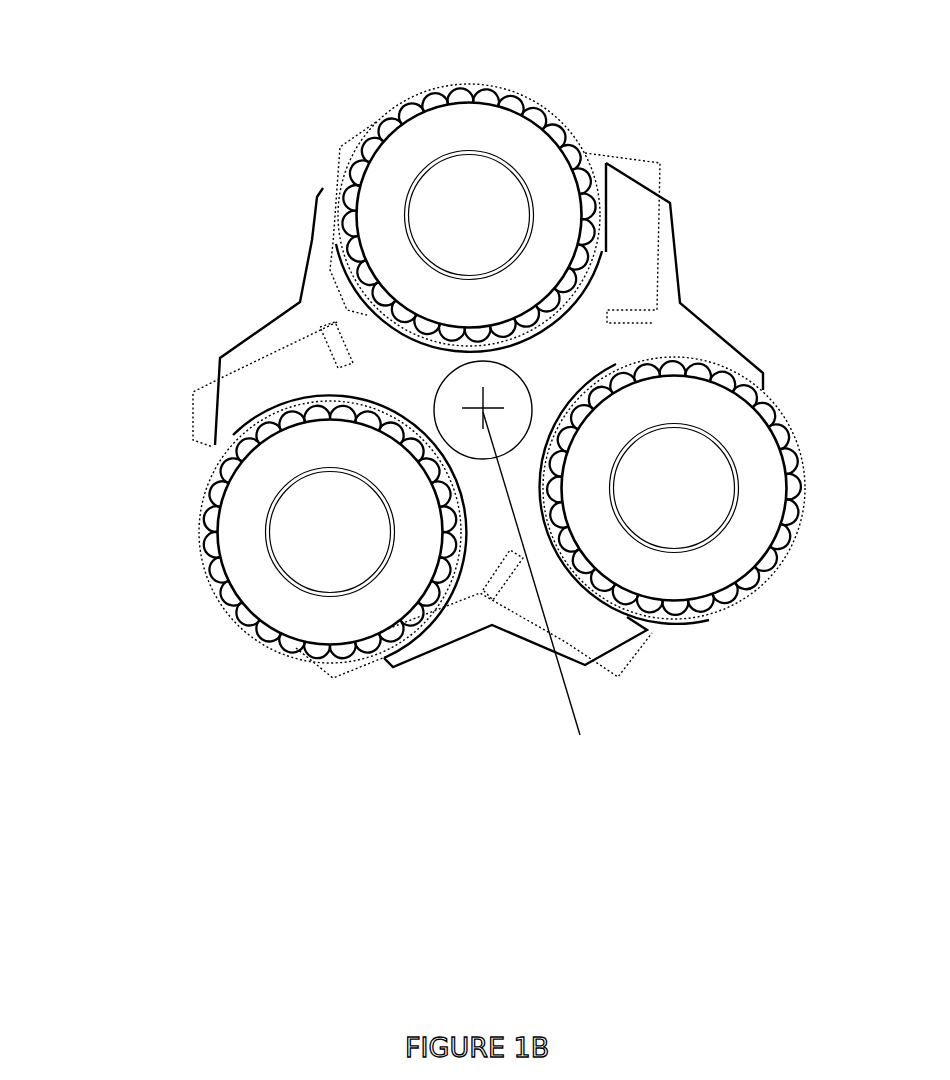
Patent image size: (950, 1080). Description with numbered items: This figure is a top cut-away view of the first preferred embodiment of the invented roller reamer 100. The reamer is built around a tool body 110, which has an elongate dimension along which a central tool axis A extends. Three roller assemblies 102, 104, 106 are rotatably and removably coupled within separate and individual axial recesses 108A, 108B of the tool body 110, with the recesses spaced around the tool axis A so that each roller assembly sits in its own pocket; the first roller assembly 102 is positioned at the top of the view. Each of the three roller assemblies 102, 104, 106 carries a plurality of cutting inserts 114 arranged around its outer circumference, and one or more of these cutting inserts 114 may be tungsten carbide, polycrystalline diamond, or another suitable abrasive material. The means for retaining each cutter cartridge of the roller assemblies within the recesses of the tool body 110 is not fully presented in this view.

The roller reamer 100 is at (468, 393).
The first roller assembly 102 is at (345, 100).
The roller assembly 104 is at (806, 438).
The roller assembly 106 is at (197, 593).
The axial recess 108A is at (604, 197).
The axial recess 108B is at (233, 435).
The tool body 110 is at (310, 237).
The cutting inserts 114 is at (405, 103).